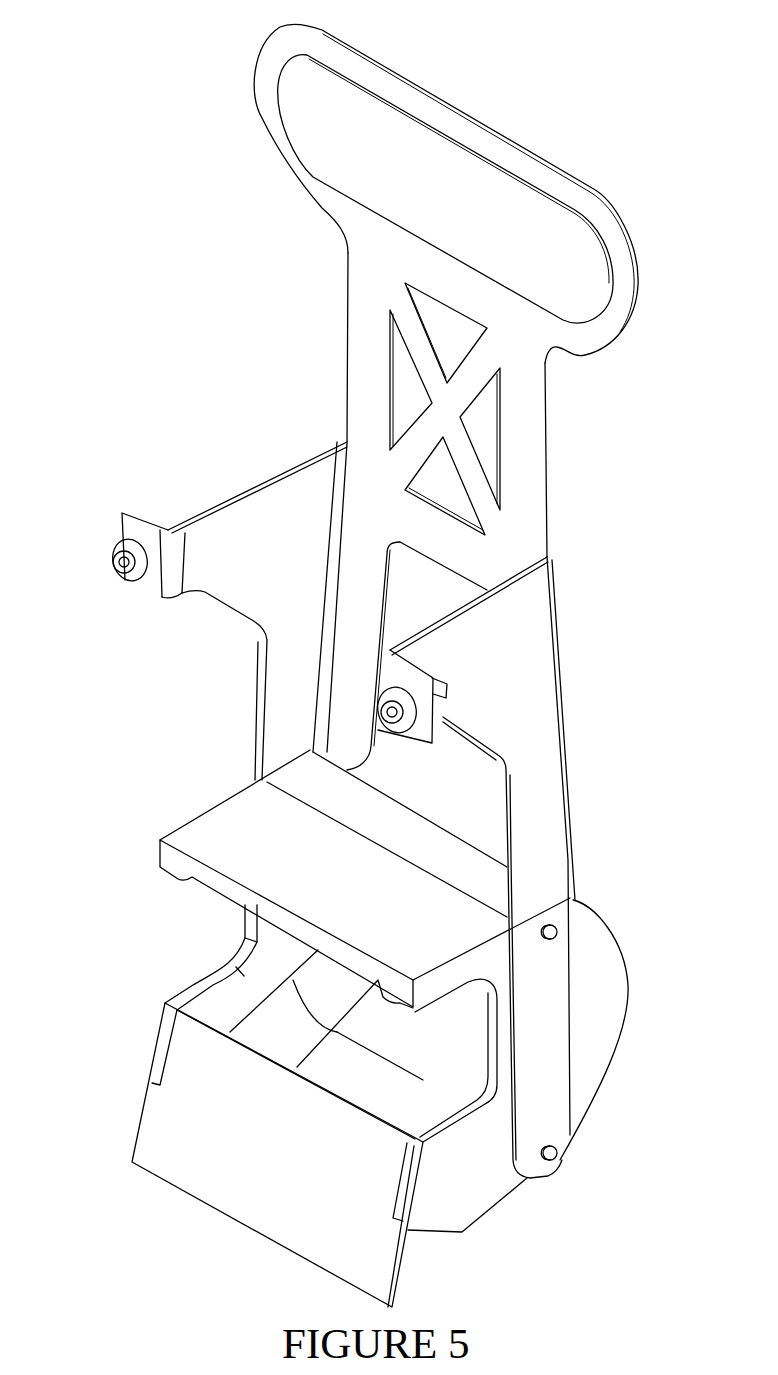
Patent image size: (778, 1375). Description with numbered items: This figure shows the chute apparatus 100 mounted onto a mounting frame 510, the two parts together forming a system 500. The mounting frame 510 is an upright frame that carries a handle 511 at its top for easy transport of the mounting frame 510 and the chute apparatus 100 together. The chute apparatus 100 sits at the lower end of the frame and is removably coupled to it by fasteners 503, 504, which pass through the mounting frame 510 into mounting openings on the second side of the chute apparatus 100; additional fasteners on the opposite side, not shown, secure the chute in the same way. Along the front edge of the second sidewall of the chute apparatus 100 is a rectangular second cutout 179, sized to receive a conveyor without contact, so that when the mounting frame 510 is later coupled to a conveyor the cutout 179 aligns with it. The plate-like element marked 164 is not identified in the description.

The chute apparatus 100 is at (350, 1106).
The mounting plate 164 is at (183, 912).
The second cutout 179 is at (462, 1027).
The system 500 is at (405, 599).
The fastener 503 is at (557, 933).
The fastener 504 is at (555, 1153).
The mounting frame 510 is at (338, 410).
The handle 511 is at (285, 47).